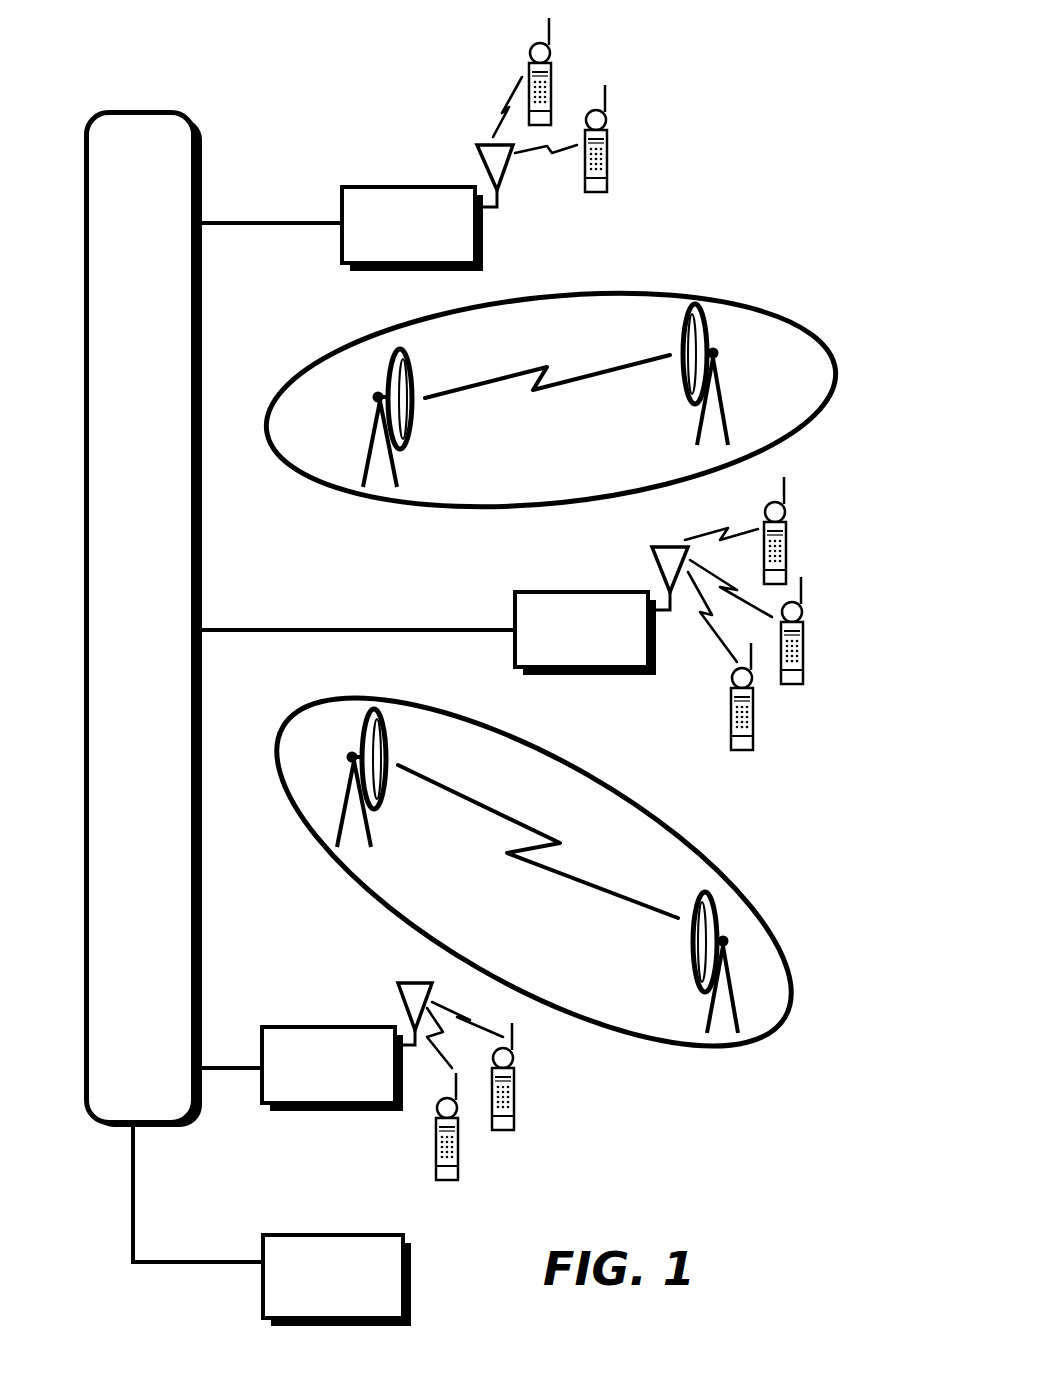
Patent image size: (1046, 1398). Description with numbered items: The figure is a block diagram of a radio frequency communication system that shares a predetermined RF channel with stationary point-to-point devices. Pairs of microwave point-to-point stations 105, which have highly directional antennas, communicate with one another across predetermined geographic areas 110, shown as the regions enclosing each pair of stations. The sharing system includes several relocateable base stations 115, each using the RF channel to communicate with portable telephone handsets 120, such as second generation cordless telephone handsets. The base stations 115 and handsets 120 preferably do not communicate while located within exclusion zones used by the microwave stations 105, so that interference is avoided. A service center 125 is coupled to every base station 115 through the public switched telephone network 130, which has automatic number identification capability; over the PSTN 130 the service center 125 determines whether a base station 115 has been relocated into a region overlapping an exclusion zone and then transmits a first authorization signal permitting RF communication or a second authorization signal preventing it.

The microwave point-to-point stations 105 is at (380, 380).
The predetermined geographic areas 110 is at (622, 293).
The base stations 115 is at (409, 187).
The portable telephone handsets 120 is at (528, 40).
The service center 125 is at (412, 1272).
The public switched telephone network (PSTN) 130 is at (150, 110).